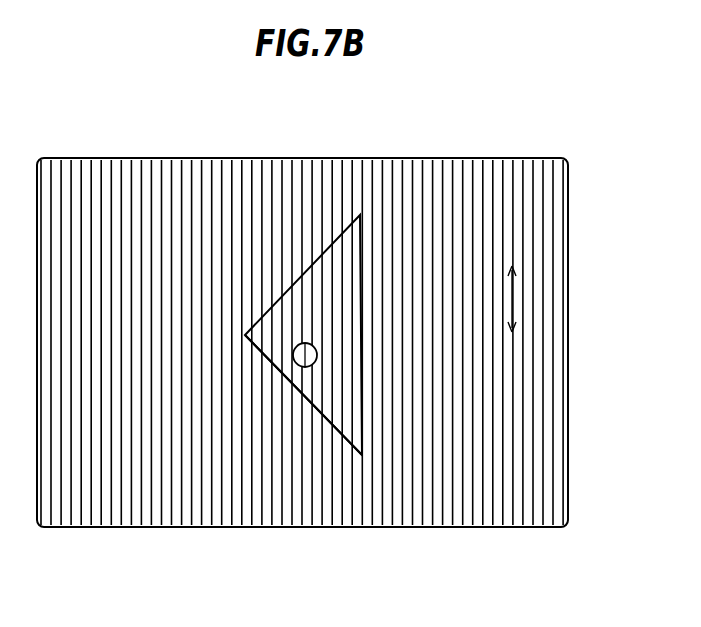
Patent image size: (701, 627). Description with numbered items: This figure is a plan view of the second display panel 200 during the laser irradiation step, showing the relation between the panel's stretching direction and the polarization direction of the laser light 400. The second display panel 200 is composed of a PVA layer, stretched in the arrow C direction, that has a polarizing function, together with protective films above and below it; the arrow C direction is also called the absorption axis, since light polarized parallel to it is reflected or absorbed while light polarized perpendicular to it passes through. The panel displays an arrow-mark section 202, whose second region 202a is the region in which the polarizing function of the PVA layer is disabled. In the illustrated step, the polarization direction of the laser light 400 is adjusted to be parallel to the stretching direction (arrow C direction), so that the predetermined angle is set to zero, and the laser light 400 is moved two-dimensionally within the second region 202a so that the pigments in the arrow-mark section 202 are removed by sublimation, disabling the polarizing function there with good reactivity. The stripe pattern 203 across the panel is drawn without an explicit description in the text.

The second display panel 200 is at (570, 243).
The arrow-mark section 202 is at (327, 262).
The second region 202a is at (350, 398).
The stripe pattern (lenticular lens) 203 is at (513, 423).
The laser light 400 is at (295, 368).
The arrow C direction C is at (512, 302).